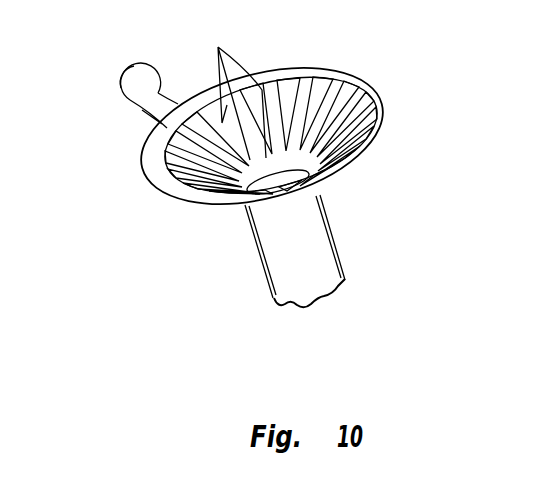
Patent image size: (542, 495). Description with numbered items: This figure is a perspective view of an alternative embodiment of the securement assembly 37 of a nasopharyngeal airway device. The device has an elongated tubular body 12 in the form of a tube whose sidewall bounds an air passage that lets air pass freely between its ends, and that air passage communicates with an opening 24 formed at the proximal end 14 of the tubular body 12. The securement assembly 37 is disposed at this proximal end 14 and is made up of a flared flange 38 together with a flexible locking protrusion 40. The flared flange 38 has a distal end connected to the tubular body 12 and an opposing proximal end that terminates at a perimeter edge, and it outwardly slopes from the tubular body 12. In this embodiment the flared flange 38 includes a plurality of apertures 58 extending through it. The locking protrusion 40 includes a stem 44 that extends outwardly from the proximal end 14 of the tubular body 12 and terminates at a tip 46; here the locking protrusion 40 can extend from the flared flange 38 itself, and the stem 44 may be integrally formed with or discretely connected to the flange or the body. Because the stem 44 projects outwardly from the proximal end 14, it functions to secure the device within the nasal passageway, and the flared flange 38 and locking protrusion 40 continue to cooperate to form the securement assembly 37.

The securement assembly 37 is at (348, 65).
The opening 24 is at (362, 101).
The apertures 58 is at (218, 47).
The flared flange 38 is at (337, 159).
The proximal end 14 is at (333, 190).
The tubular body 12 is at (347, 264).
The locking protrusion 40 is at (38, 67).
The tip 46 is at (120, 82).
The stem 44 is at (136, 112).